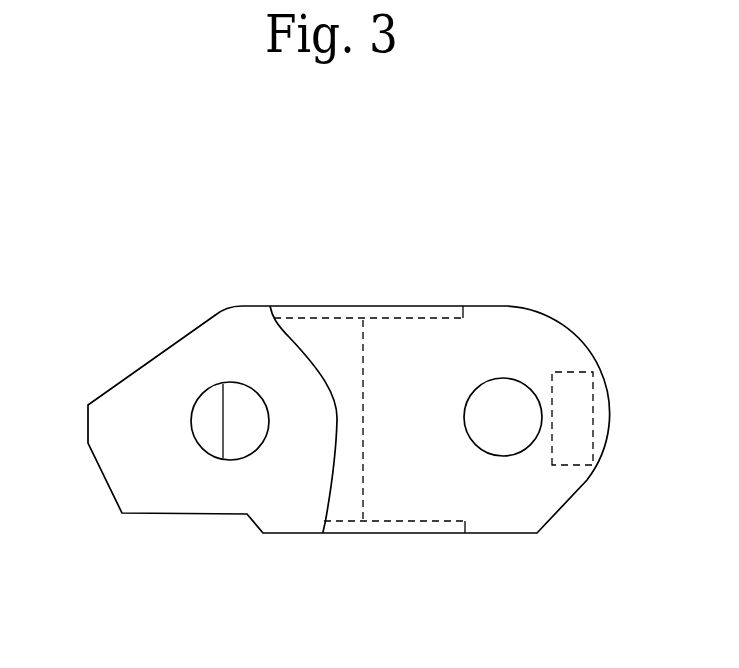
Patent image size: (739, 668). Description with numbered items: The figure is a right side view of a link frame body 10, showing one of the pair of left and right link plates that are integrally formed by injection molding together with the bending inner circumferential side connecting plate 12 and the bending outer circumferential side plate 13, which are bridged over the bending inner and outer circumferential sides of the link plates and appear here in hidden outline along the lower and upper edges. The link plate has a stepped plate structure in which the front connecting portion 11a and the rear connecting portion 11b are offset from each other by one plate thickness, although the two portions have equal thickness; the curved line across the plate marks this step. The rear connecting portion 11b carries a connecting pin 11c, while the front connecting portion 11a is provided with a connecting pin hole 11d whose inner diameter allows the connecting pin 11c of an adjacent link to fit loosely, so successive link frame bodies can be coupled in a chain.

The link plate 10 is at (512, 307).
The front connecting portion 11a is at (550, 332).
The rear connecting portion 11b is at (135, 387).
The connecting pin 11c is at (207, 438).
The connecting pin hole 11d is at (513, 453).
The bending inner circumferential side connecting plate 12 is at (415, 525).
The bending outer circumferential side plate 13 is at (405, 312).